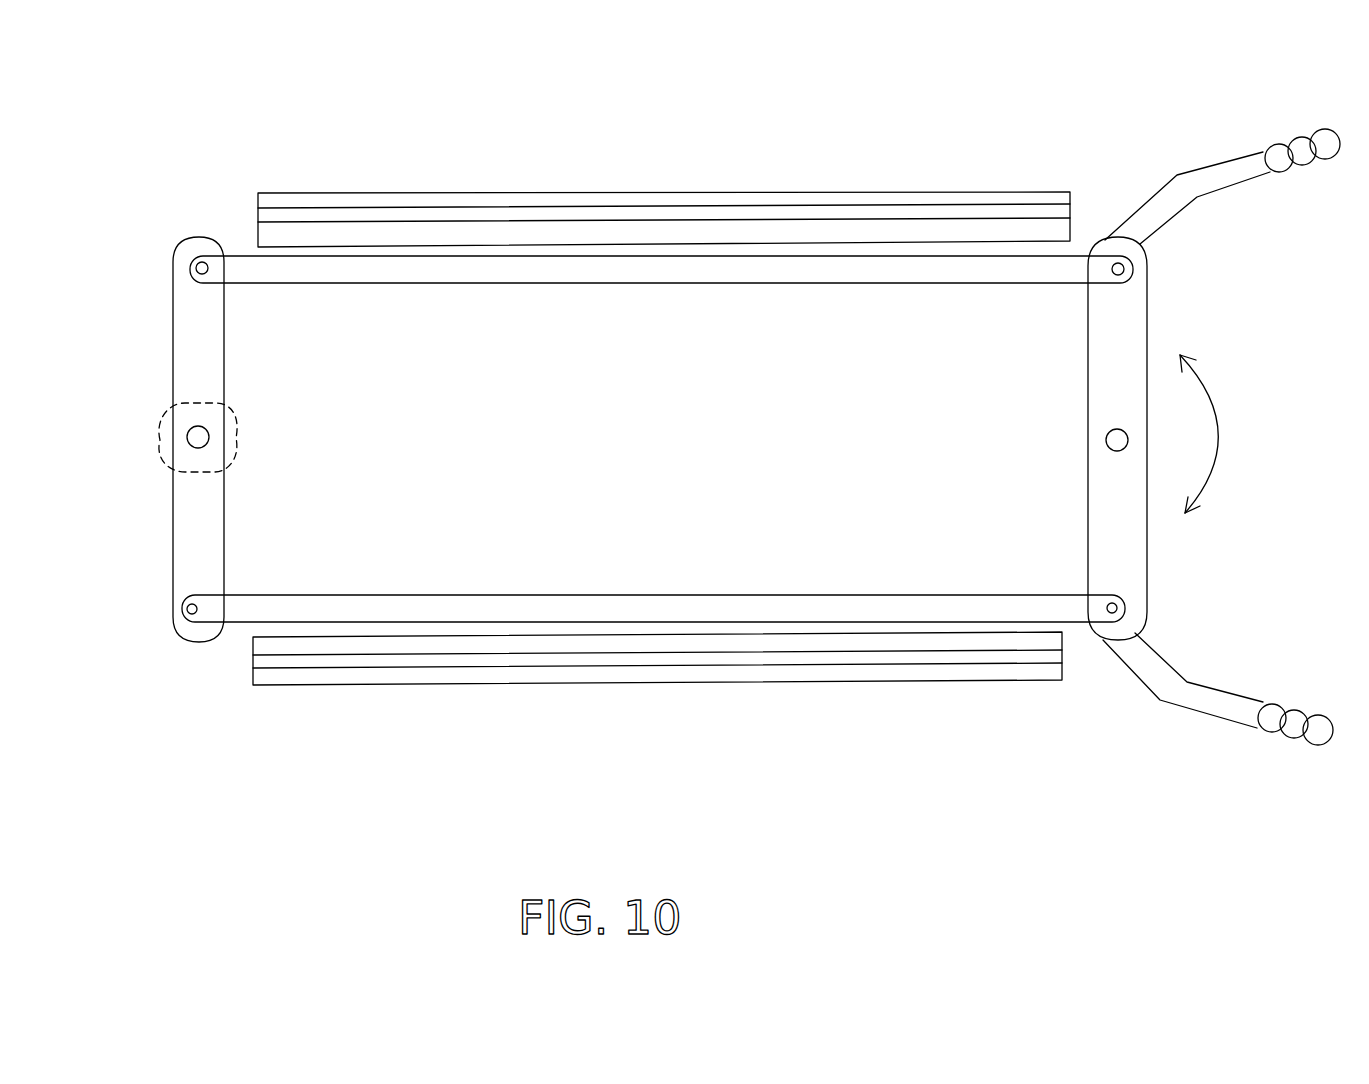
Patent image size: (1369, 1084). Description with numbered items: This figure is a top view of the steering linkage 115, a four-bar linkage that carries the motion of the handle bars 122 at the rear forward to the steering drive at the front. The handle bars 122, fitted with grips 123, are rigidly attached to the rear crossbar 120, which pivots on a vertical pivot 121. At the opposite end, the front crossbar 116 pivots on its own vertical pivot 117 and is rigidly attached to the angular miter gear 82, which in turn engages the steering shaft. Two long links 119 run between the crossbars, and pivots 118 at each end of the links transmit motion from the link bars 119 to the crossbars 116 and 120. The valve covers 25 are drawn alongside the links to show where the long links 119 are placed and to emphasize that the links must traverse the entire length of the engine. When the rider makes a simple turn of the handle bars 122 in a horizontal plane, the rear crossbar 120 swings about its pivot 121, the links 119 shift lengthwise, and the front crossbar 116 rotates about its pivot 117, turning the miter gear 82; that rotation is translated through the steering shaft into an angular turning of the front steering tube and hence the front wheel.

The frame assembly 115 is at (52, 234).
The front crossbar 116 is at (182, 543).
The vertical pivot 117 is at (196, 430).
The miter gear 82 is at (152, 442).
The pivots 118 is at (207, 252).
The long links 119 is at (623, 272).
The rear crossbar 120 is at (1130, 332).
The vertical pivot 121 is at (1106, 437).
The handle bars 122 is at (1217, 157).
The grips 123 is at (1300, 180).
The valve covers 25 is at (992, 180).